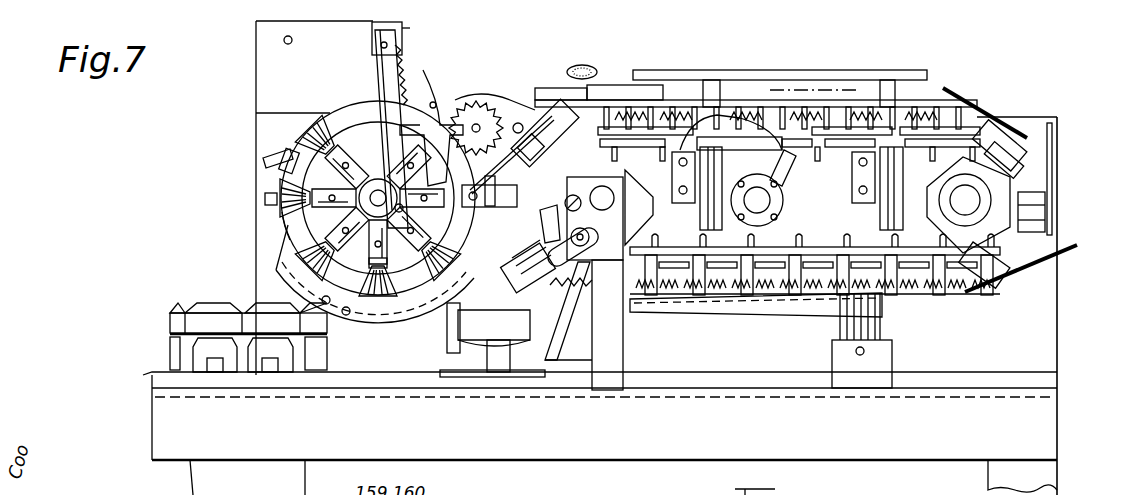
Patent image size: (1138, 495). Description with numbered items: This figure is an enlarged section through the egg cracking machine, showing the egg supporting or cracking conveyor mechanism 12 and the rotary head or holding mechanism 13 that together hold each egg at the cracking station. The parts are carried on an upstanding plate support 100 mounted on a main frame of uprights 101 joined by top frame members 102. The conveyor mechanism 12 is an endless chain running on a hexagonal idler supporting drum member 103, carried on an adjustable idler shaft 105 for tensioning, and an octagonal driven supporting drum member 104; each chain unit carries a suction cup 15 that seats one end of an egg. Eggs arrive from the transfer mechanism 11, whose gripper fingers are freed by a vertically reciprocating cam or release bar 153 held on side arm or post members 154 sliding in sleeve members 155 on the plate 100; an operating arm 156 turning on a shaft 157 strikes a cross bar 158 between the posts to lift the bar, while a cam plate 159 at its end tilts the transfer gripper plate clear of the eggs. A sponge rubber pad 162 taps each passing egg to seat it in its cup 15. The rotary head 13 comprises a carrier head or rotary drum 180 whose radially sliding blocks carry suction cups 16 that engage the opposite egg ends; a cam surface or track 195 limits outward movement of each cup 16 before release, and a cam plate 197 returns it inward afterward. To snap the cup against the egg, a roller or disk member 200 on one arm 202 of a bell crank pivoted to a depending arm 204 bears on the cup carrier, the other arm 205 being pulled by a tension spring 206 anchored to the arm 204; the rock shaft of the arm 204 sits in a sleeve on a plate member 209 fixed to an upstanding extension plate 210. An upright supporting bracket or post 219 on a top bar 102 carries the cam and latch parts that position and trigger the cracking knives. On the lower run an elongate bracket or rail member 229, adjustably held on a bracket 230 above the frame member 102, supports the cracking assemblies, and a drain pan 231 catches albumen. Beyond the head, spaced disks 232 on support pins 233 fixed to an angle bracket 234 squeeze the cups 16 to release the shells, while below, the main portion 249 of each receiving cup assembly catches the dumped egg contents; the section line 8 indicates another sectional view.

The section line 8 is at (783, 100).
The transfer mechanism 11 is at (602, 70).
The egg supporting or cracking conveyor mechanism 12 is at (975, 90).
The rotary head or holding mechanism 13 is at (262, 201).
The suction cup 15 is at (398, 5).
The suction cup 16 is at (372, 113).
The upstanding plate support 100 is at (1036, 126).
The uprights 101 is at (290, 478).
The top frame members 102 is at (646, 443).
The idler supporting drum member 103 is at (966, 291).
The driven supporting drum member 104 is at (633, 212).
The idler shaft 105 is at (970, 198).
The cam or release bar 153 is at (808, 72).
The side arm or post members 154 is at (712, 84).
The sleeve members 155 is at (706, 206).
The operating arm 156 is at (785, 177).
The shaft 157 is at (762, 200).
The cross bar 158 is at (727, 146).
The cam plate 159 is at (622, 86).
The sponge rubber pad 162 is at (570, 68).
The carrier head or rotary drum 180 is at (281, 226).
The cam surface or track 195 is at (458, 112).
The cam plate 197 is at (277, 251).
The roller or disk member 200 is at (447, 212).
The arm of bell crank member 202 is at (400, 262).
The depending arm 204 is at (378, 52).
The arm of bell crank 205 is at (430, 97).
The tension spring 206 is at (402, 66).
The plate member 209 is at (397, 30).
The upstanding extension plate 210 is at (300, 25).
The upright supporting bracket or post 219 is at (608, 338).
The elongate bracket or rail member 229 is at (772, 308).
The bracket 230 is at (880, 332).
The drain pan 231 is at (568, 362).
The spaced disks 232 is at (306, 172).
The support pins 233 is at (265, 180).
The angle bracket 234 is at (275, 152).
The main portion of cup assembly 249 is at (495, 327).